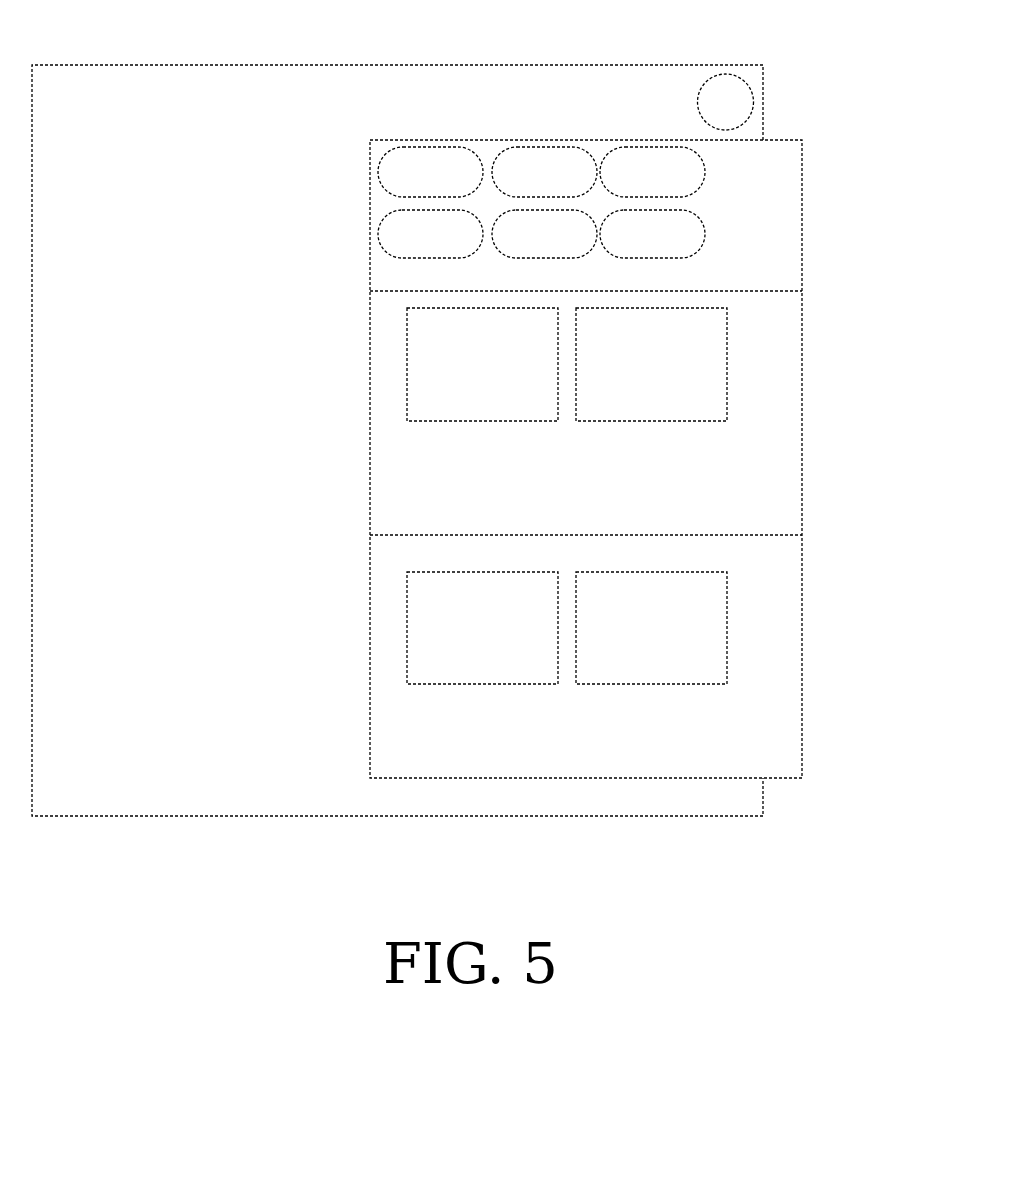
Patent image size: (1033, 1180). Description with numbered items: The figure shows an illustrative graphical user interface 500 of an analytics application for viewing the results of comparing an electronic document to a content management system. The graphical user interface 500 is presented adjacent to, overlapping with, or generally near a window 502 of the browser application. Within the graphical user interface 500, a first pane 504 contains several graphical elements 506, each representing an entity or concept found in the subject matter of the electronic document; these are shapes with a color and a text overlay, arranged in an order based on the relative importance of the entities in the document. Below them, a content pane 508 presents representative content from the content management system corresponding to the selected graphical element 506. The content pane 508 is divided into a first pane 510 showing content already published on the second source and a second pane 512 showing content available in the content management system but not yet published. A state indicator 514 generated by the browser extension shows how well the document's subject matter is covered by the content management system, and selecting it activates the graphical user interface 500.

The graphical user interface 500 is at (492, 140).
The window 502 is at (134, 85).
The first pane 504 is at (625, 219).
The graphical elements 506 is at (688, 232).
The content pane 508 is at (698, 363).
The first pane 510 is at (625, 496).
The second pane 512 is at (787, 628).
The state indicator 514 is at (735, 93).